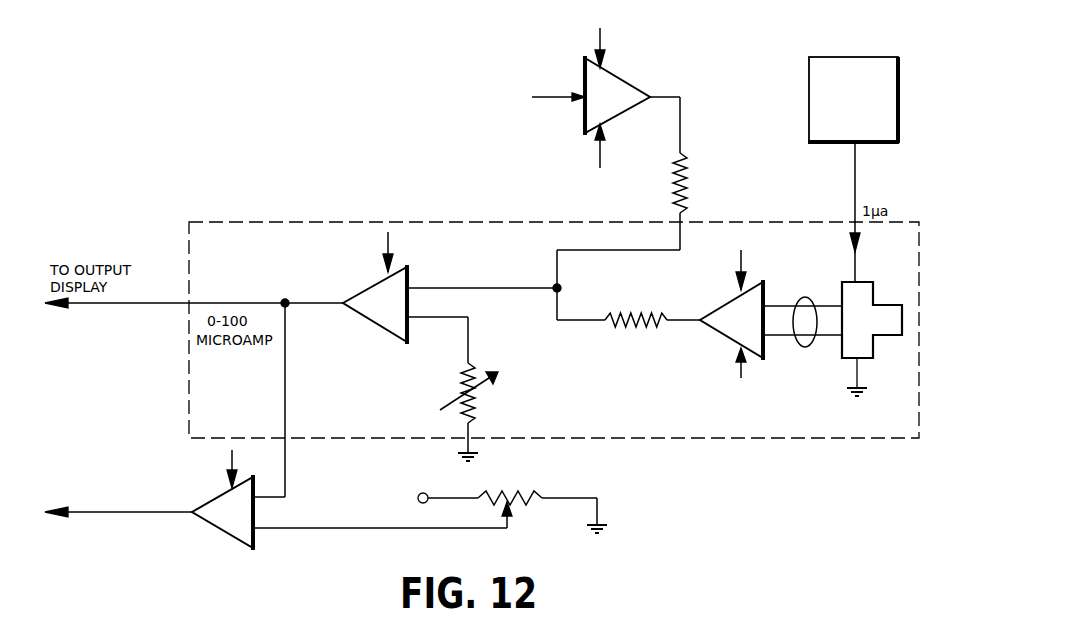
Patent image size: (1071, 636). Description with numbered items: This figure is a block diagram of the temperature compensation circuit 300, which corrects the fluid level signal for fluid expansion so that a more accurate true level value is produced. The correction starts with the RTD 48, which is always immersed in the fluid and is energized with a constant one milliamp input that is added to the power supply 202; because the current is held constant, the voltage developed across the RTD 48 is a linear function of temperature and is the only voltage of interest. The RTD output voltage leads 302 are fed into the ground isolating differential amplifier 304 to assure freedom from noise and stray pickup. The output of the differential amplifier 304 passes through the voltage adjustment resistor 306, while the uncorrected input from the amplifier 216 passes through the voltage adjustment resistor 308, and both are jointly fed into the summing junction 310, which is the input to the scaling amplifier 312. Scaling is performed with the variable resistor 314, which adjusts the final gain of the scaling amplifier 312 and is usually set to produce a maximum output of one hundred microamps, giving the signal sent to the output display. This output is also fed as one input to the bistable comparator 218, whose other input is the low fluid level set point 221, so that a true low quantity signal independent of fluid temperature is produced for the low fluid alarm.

The amplifier 216 is at (610, 72).
The voltage adjustment resistor 308 is at (682, 200).
The power supply 202 is at (898, 112).
The compensation circuit 300 is at (919, 222).
The summing junction 310 is at (553, 287).
The scaling amplifier 312 is at (402, 270).
The voltage adjustment resistor 306 is at (614, 326).
The ground isolating differential amplifier 304 is at (728, 302).
The RTD output voltage leads 302 is at (805, 297).
The RTD 48 is at (881, 303).
The variable resistor 314 is at (476, 398).
The bistable comparator 218 is at (212, 525).
The low fluid level set point 221 is at (516, 512).